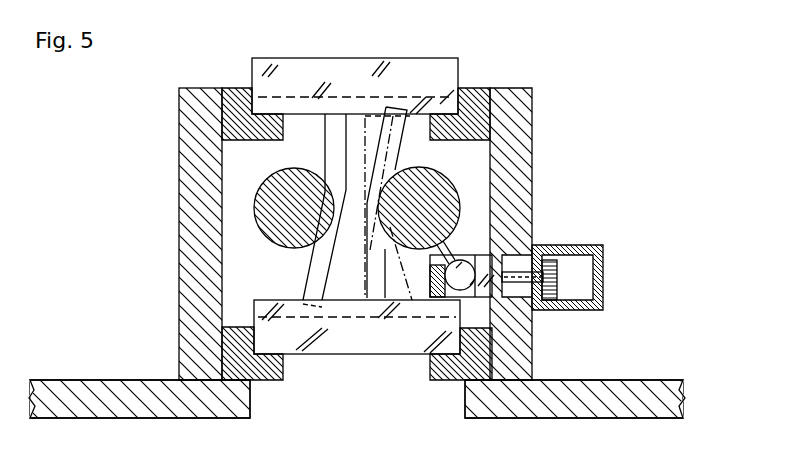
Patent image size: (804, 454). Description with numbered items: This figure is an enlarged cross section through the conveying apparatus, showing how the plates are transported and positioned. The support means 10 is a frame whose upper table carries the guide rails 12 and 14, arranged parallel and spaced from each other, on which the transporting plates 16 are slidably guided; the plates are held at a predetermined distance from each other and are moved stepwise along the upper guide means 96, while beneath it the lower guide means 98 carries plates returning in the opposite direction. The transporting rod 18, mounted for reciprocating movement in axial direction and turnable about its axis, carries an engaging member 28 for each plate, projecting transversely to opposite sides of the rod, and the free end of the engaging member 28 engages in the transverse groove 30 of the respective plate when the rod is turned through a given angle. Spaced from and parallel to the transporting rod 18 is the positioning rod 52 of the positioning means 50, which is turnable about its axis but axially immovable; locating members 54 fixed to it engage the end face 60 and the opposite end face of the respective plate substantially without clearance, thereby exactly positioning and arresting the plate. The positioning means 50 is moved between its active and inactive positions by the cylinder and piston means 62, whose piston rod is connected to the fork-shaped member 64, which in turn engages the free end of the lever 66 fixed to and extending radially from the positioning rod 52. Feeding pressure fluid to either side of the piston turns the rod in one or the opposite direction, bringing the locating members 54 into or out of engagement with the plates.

The support means 10 is at (109, 388).
The guide rail 12 is at (477, 98).
The guide rail 14 is at (233, 92).
The transporting plate 16 is at (344, 58).
The transporting rod 18 is at (270, 180).
The engaging member 28 is at (330, 153).
The transverse groove 30 is at (289, 97).
The positioning means 50 is at (469, 203).
The positioning rod 52 is at (434, 185).
The locating member 54 is at (397, 137).
The end face 60 is at (410, 77).
The cylinder and piston means 62 is at (572, 246).
The fork-shaped member 64 is at (480, 290).
The lever 66 is at (463, 264).
The upper guide means 96 is at (467, 84).
The lower guide means 98 is at (243, 328).